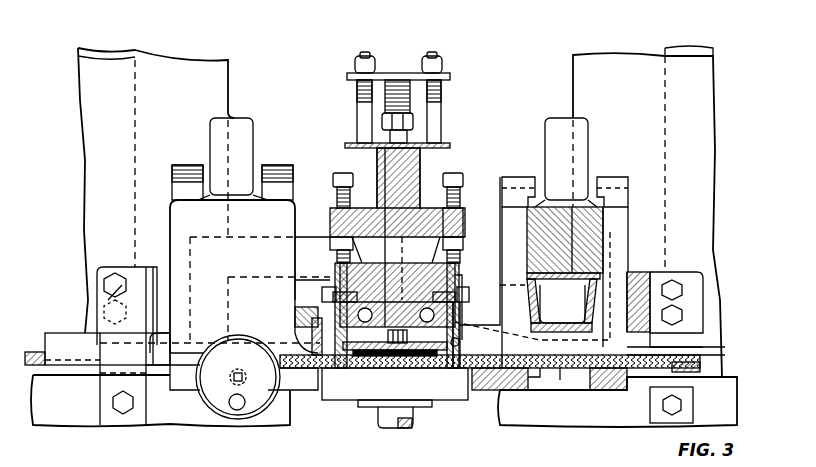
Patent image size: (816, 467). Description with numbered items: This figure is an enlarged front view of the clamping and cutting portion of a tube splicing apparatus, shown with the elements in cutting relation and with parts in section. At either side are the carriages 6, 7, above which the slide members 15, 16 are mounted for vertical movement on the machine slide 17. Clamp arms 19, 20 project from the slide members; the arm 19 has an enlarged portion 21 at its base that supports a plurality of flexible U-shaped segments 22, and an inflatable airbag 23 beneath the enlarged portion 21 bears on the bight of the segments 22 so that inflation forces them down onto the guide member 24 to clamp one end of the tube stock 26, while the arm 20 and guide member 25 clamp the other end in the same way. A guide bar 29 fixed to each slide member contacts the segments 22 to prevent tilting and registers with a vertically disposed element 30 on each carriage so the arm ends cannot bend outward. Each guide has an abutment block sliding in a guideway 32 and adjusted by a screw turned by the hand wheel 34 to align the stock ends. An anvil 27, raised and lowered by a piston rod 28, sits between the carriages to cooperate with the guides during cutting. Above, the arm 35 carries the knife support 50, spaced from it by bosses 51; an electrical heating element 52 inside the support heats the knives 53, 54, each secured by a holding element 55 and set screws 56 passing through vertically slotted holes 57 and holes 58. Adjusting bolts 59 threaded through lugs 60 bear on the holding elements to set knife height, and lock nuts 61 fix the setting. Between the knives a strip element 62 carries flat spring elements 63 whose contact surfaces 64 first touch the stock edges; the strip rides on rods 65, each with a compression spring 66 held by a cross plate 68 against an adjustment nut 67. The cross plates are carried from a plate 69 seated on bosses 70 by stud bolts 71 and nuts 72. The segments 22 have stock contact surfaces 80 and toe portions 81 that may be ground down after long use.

The carriage 6 is at (600, 417).
The carriage 7 is at (184, 405).
The slide member 15 is at (706, 138).
The slide member 16 is at (96, 123).
The machine slide 17 is at (695, 52).
The clamp arm 19 is at (582, 133).
The clamp arm 20 is at (240, 147).
The enlarged portion 21 is at (596, 258).
The segments 22 is at (278, 185).
The inflatable airbag 23 is at (580, 310).
The guide member 24 is at (490, 392).
The guide member 25 is at (301, 378).
The tube stock 26 is at (355, 385).
The anvil 27 is at (405, 392).
The piston rod 28 is at (408, 426).
The guide bar 29 is at (168, 278).
The vertically disposed element 30 is at (83, 330).
The guideway 32 is at (536, 378).
The hand wheel 34 is at (256, 393).
The arm 35 is at (420, 186).
The knife support 50 is at (461, 258).
The bosses 51 is at (430, 241).
The electrical heating element 52 is at (462, 322).
The knife 53 is at (460, 348).
The knife 54 is at (332, 330).
The holding element 55 is at (336, 262).
The set screws 56 is at (335, 292).
The vertically slotted holes 57 is at (462, 285).
The holes 58 is at (466, 295).
The adjusting bolts 59 is at (461, 195).
The lugs 60 is at (463, 214).
The lock nuts 61 is at (463, 245).
The strip element 62 is at (316, 343).
The flat spring elements 63 is at (412, 351).
The contact surfaces 64 is at (432, 356).
The rods 65 is at (406, 135).
The compression spring 66 is at (402, 78).
The adjustment nut 67 is at (382, 122).
The cross plate 68 is at (450, 77).
The plate 69 is at (347, 145).
The bosses 70 is at (380, 160).
The stud bolts 71 is at (443, 104).
The nuts 72 is at (443, 62).
The stock contact surfaces 80 is at (558, 374).
The toe portions 81 is at (488, 358).